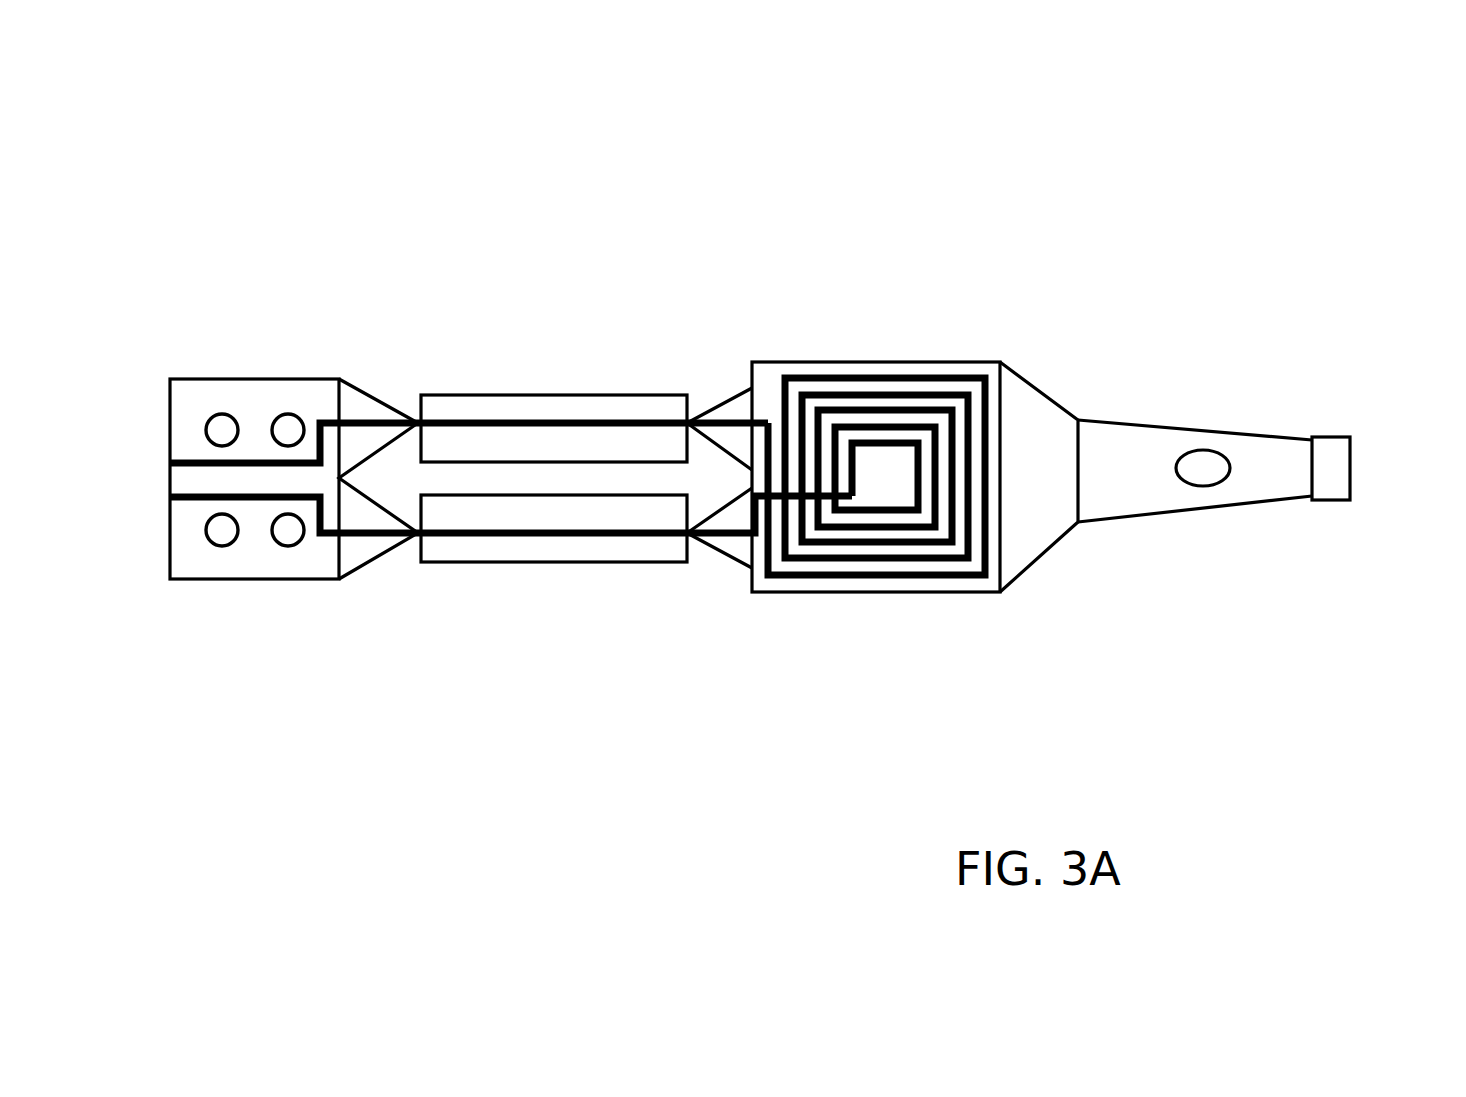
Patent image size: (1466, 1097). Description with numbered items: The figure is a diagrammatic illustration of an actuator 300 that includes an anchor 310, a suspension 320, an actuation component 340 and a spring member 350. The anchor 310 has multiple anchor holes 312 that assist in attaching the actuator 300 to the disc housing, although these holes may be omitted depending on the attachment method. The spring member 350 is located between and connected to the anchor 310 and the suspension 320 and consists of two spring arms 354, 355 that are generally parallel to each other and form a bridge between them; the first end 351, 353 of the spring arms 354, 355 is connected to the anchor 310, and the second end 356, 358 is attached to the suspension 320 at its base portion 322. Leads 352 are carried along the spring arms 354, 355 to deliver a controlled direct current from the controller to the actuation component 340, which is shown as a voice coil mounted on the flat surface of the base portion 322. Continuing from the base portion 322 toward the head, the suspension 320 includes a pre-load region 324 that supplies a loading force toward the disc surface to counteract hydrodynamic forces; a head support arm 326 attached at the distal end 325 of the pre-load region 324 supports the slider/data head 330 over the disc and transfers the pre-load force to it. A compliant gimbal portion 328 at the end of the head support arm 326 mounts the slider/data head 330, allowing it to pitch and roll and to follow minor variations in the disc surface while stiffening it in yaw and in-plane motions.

The actuator 300 is at (796, 406).
The anchor 310 is at (277, 413).
The anchor holes 312 is at (288, 430).
The suspension 320 is at (1107, 509).
The base portion 322 is at (998, 361).
The pre-load region 324 is at (1042, 418).
The distal end 325 is at (1078, 522).
The head support arm 326 is at (1143, 457).
The gimbal portion 328 is at (1305, 468).
The slider/data head 330 is at (1327, 434).
The actuation component 340 is at (863, 378).
The spring member 350 is at (511, 491).
The first end 351 is at (418, 533).
The leads 352 is at (485, 422).
The first end 353 is at (420, 420).
The spring arm 354 is at (560, 563).
The spring arm 355 is at (613, 395).
The second end 356 is at (689, 422).
The second end 358 is at (688, 535).